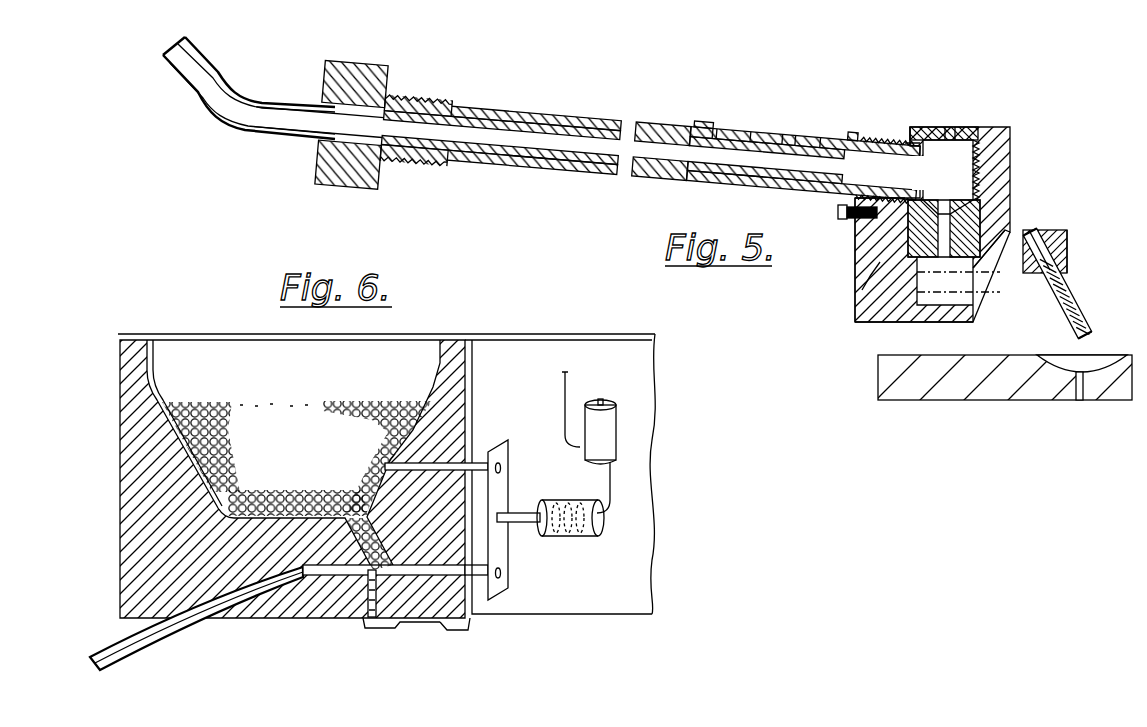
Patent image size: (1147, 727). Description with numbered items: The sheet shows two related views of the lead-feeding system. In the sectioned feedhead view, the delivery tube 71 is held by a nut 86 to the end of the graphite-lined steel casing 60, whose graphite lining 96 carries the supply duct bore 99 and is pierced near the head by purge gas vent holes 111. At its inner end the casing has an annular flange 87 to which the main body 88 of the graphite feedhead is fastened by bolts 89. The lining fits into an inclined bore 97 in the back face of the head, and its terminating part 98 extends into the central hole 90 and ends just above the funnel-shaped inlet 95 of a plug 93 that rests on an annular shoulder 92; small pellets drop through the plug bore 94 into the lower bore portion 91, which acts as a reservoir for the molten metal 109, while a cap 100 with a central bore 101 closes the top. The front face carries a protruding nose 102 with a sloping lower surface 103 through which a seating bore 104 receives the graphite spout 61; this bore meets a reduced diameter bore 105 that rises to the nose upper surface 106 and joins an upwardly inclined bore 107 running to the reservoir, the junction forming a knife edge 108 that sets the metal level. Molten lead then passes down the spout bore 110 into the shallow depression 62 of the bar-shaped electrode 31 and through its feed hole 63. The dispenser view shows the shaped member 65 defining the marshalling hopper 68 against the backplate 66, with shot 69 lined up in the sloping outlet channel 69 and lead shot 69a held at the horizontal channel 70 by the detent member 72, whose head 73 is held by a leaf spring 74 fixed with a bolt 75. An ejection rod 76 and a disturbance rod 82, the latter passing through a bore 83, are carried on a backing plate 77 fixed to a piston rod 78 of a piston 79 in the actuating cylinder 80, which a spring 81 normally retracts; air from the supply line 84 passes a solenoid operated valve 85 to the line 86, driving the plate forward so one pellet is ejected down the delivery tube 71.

In FIG. 5, the bar-shaped electrode 31 is at (995, 392).
In FIG. 5, the steel casing 60 is at (488, 170).
In FIG. 5, the graphite spout 61 is at (1080, 297).
In FIG. 5, the shallow depression 62 is at (1110, 343).
In FIG. 5, the feed hole 63 is at (1078, 400).
In FIG. 6, the shaped member 65 is at (122, 393).
In FIG. 6, the backplate 66 is at (345, 337).
In FIG. 6, the marshalling hopper 68 is at (158, 395).
In FIG. 6, the sloping outlet channel 69 is at (305, 506).
In FIG. 6, the lead shot 69a is at (350, 493).
In FIG. 6, the horizontal channel 70 is at (325, 575).
In FIG. 5, the delivery tube 71 is at (220, 72).
In FIG. 6, the delivery tube 71 is at (118, 652).
In FIG. 6, the detent member 72 is at (362, 615).
In FIG. 6, the head 73 is at (372, 620).
In FIG. 6, the leaf spring 74 is at (420, 626).
In FIG. 6, the bolt 75 is at (470, 622).
In FIG. 6, the ejection rod 76 is at (488, 600).
In FIG. 6, the backing plate 77 is at (503, 562).
In FIG. 6, the piston rod 78 is at (512, 513).
In FIG. 6, the piston 79 is at (583, 530).
In FIG. 6, the actuating cylinder 80 is at (596, 530).
In FIG. 6, the spring 81 is at (565, 510).
In FIG. 6, the disturbance rod 82 is at (480, 460).
In FIG. 6, the bore 83 is at (466, 455).
In FIG. 6, the air supply line 84 is at (569, 382).
In FIG. 6, the solenoid operated valve 85 is at (602, 404).
In FIG. 5, the line / nut 86 is at (322, 168).
In FIG. 6, the line / nut 86 is at (609, 480).
In FIG. 5, the annular flange 87 is at (852, 228).
In FIG. 5, the main body 88 is at (855, 312).
In FIG. 5, the bolt 89 is at (840, 213).
In FIG. 5, the central hole 90 is at (1012, 150).
In FIG. 5, the lower bore portion 91 is at (894, 310).
In FIG. 5, the annular shoulder 92 is at (865, 278).
In FIG. 5, the plug 93 is at (975, 232).
In FIG. 5, the central bore 94 is at (975, 208).
In FIG. 5, the funnel-shaped inlet 95 is at (948, 205).
In FIG. 5, the graphite lining 96 is at (556, 160).
In FIG. 5, the inclined bore 97 is at (905, 140).
In FIG. 5, the terminating part 98 is at (872, 145).
In FIG. 5, the supply duct bore 99 is at (806, 135).
In FIG. 5, the cap 100 is at (978, 130).
In FIG. 5, the cap bore 101 is at (950, 124).
In FIG. 5, the protruding nose 102 is at (1067, 265).
In FIG. 5, the sloping lower surface 103 is at (1005, 302).
In FIG. 5, the seating bore 104 is at (1025, 282).
In FIG. 5, the reduced diameter bore 105 is at (1060, 252).
In FIG. 5, the upper surface of nose 106 is at (1048, 240).
In FIG. 5, the upwardly inclined bore 107 is at (1003, 233).
In FIG. 5, the knife edge 108 is at (1030, 232).
In FIG. 5, the molten metal 109 is at (950, 300).
In FIG. 5, the spout bore 110 is at (1085, 325).
In FIG. 5, the purge gas vent holes 111 is at (748, 128).